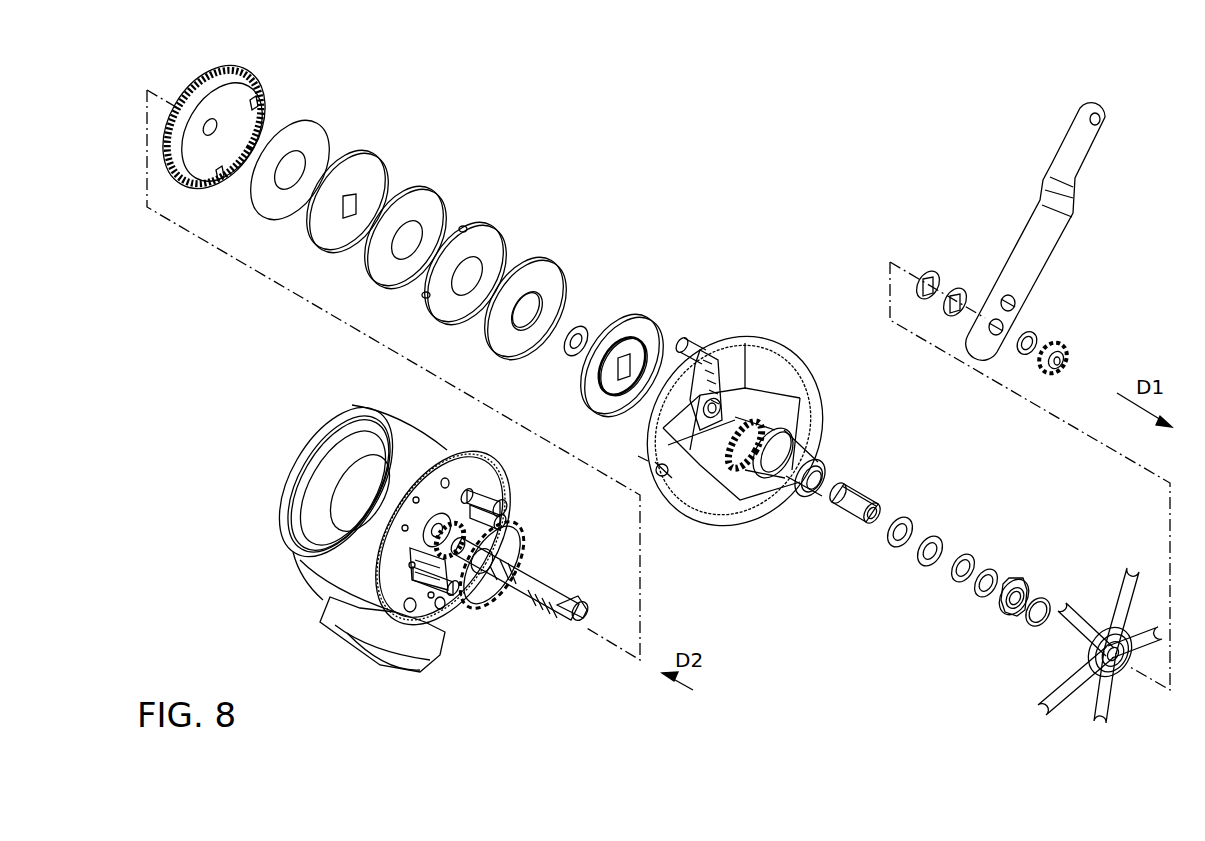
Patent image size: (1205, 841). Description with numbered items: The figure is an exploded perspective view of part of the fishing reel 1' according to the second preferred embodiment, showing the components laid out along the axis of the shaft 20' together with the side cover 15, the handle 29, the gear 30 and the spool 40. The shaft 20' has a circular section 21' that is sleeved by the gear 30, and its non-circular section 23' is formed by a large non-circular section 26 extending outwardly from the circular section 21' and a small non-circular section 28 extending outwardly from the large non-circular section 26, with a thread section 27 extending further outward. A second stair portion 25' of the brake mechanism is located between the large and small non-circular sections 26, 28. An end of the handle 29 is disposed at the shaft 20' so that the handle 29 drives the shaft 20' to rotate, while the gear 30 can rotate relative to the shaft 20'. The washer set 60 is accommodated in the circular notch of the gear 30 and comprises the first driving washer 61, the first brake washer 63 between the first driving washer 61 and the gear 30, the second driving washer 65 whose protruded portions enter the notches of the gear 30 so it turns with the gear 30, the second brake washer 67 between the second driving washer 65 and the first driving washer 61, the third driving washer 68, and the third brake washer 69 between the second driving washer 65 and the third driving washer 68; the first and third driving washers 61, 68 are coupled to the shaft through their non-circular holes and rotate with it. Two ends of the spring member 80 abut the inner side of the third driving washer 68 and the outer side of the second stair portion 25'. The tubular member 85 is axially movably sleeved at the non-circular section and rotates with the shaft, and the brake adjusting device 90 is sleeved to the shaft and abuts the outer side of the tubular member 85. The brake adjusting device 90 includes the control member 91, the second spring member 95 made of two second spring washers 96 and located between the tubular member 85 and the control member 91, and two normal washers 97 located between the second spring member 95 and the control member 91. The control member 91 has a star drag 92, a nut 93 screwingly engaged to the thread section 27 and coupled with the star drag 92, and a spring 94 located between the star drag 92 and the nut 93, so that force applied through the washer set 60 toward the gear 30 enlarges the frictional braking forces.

The fishing reel 1' is at (888, 149).
The side cover 15 is at (748, 520).
The shaft 20' is at (469, 579).
The circular section 21' is at (483, 604).
The non-circular section 23' is at (472, 587).
The second stair portion 25' is at (457, 602).
The large non-circular section 26 is at (482, 561).
The thread section 27 is at (565, 623).
The small non-circular section 28 is at (528, 600).
The handle 29 is at (1077, 153).
The gear 30 is at (233, 68).
The spool 40 is at (342, 447).
The washer set 60 is at (700, 283).
The first driving washer 61 is at (370, 163).
The first brake washer 63 is at (312, 130).
The second driving washer 65 is at (488, 235).
The second brake washer 67 is at (430, 202).
The third driving washer 68 is at (647, 330).
The third brake washer 69 is at (550, 270).
The spring member 80 is at (567, 357).
The tubular member 85 is at (858, 497).
The brake adjusting device 90 is at (1090, 502).
The control member 91 is at (1103, 556).
The star drag 92 is at (1080, 617).
The nut 93 is at (1022, 580).
The spring 94 is at (1043, 597).
The second spring member 95 is at (988, 498).
The second spring washers 96 is at (907, 517).
The normal washers 97 is at (995, 567).